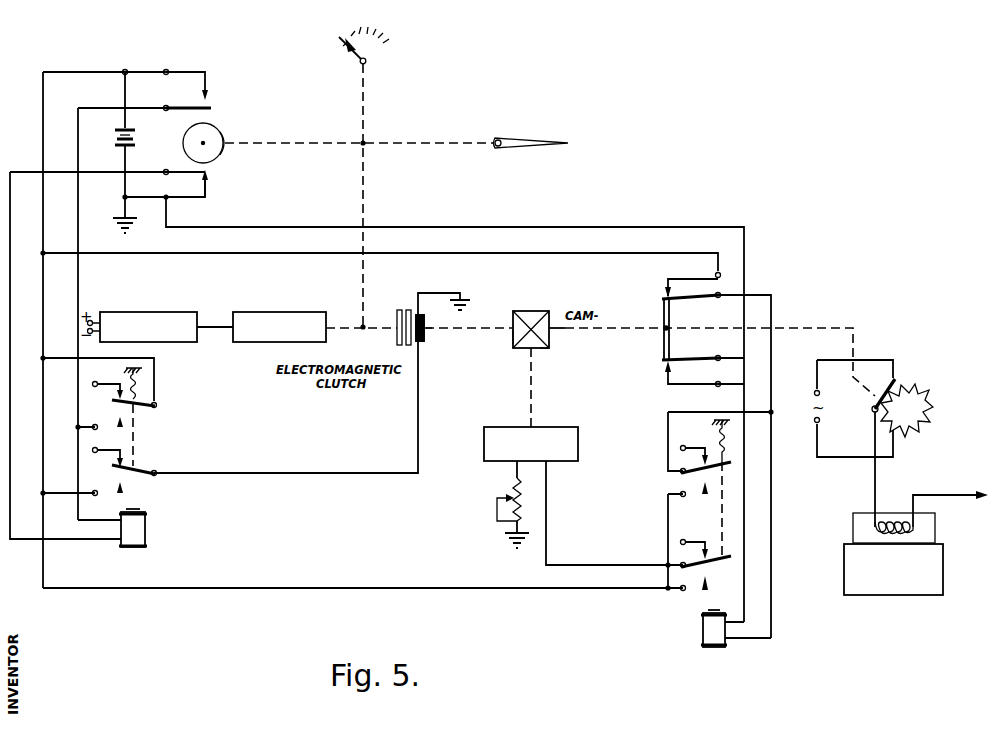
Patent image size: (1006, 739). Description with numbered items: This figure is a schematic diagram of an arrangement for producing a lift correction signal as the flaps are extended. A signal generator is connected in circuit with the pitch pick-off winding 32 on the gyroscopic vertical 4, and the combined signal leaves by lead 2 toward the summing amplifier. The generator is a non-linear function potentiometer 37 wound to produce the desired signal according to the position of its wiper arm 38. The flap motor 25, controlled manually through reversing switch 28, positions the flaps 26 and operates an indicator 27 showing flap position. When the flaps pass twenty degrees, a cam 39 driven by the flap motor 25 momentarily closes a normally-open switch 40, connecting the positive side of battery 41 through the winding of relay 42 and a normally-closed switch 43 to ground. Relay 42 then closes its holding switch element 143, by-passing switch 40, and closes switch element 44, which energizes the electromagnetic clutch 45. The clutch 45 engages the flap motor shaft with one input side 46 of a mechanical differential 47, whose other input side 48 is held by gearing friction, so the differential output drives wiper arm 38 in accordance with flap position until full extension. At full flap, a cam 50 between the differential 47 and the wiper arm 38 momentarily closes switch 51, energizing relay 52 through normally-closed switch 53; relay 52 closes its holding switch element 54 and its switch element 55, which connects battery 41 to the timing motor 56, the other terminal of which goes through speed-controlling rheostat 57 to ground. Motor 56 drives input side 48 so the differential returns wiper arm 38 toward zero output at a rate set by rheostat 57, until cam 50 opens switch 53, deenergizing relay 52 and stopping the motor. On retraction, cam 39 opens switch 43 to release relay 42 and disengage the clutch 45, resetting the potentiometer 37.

The lead 2 is at (960, 484).
The gyroscopic vertical 4 is at (943, 570).
The flap motor 25 is at (298, 310).
The flaps 26 is at (512, 148).
The indicator 27 is at (385, 48).
The reversing switch 28 is at (173, 310).
The winding 32 is at (940, 532).
The non-linear function potentiometer 37 is at (932, 408).
The wiper arm 38 is at (870, 402).
The cam 39 is at (227, 129).
The normally-open switch 40 is at (190, 96).
The battery 41 is at (140, 133).
The relay 42 is at (148, 528).
The normally-closed switch 43 is at (186, 182).
The switch element 44 is at (140, 488).
The electromagnetic clutch 45 is at (393, 314).
The input side 46 is at (512, 336).
The mechanical differential 47 is at (540, 306).
The input side 48 is at (549, 348).
The cam 50 is at (662, 324).
The normally-open switch 51 is at (664, 298).
The relay 52 is at (703, 638).
The normally-closed switch 53 is at (660, 362).
The holding switch element 54 is at (690, 478).
The switch element 55 is at (712, 572).
The timing motor 56 is at (484, 448).
The speed-controlling rheostat 57 is at (512, 486).
The holding switch element 143 is at (138, 409).